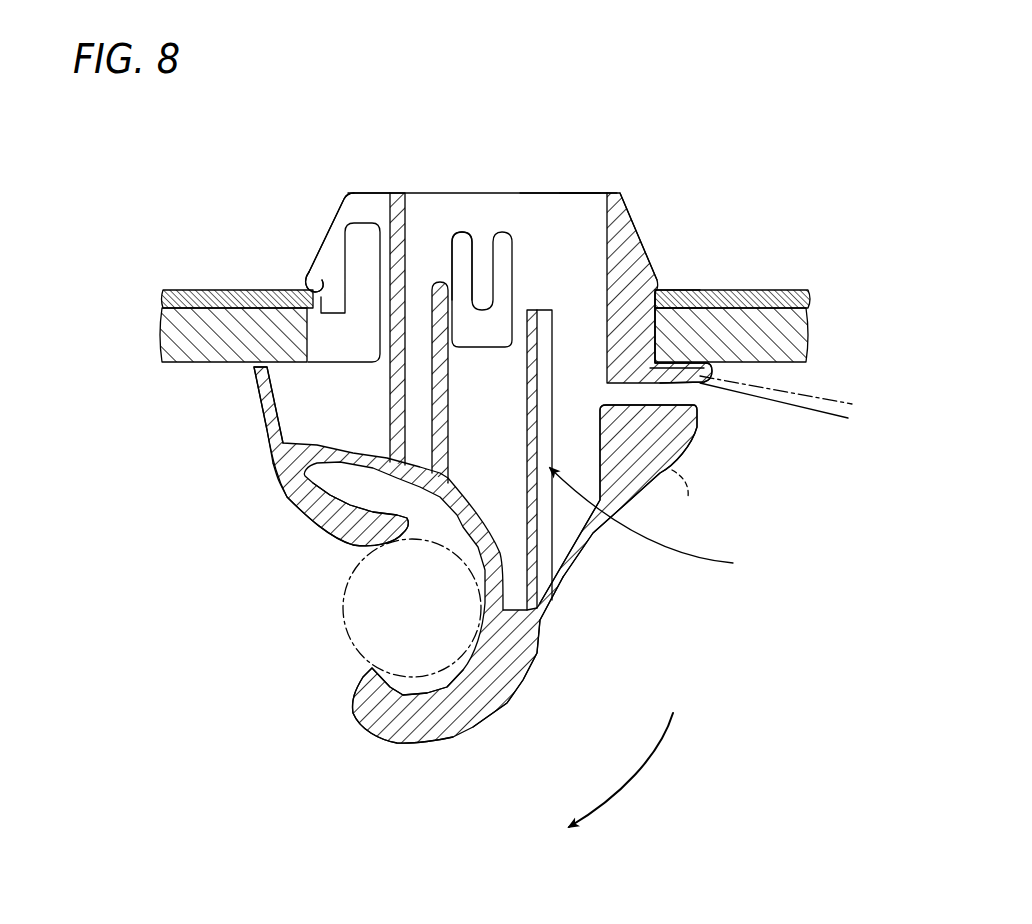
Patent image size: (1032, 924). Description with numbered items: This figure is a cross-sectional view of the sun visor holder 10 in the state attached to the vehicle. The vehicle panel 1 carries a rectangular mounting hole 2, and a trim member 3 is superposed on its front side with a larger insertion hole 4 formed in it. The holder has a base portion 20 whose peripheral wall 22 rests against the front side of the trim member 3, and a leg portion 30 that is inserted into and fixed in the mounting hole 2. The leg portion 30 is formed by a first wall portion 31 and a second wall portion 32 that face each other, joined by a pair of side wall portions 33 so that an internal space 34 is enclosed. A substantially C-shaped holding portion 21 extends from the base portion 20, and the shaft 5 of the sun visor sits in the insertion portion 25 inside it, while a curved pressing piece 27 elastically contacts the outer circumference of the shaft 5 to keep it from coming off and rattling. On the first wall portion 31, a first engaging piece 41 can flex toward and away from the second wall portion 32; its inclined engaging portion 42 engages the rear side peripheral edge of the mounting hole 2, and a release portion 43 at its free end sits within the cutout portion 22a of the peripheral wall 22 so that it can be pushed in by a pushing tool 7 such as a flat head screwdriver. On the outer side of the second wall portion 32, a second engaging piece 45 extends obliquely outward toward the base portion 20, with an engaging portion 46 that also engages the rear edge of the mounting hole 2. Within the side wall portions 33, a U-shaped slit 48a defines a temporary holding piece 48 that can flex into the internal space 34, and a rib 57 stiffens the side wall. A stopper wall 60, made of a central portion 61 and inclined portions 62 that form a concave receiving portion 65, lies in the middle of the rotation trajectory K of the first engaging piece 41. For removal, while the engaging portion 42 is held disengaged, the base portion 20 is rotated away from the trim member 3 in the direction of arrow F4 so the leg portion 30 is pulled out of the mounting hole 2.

The sun visor holder 10 is at (343, 166).
The leg portion 30 is at (595, 182).
The first wall portion 31 is at (617, 205).
The second wall portion 32 is at (398, 212).
The side wall portion 33 is at (553, 195).
The internal space 34 is at (546, 237).
The first engaging piece 41 is at (650, 243).
The engaging portion 42 is at (658, 295).
The release portion 43 is at (665, 383).
The second engaging piece 45 is at (335, 236).
The engaging portion 46 is at (318, 290).
The temporary holding piece 48 is at (485, 250).
The slit 48a is at (460, 238).
The rib 57 is at (440, 280).
The stopper wall 60 is at (540, 300).
The central portion 61 is at (533, 540).
The inclined portion 62 is at (545, 503).
The concave receiving portion 65 is at (655, 523).
The rotation trajectory K is at (680, 499).
The base portion 20 is at (193, 394).
The holding portion 21 is at (465, 740).
The peripheral wall 22 is at (262, 405).
The cutout portion 22a is at (683, 393).
The insertion portion 25 is at (477, 655).
The pressing piece 27 is at (315, 516).
The shaft 5 is at (343, 620).
The vehicle panel 1 is at (785, 295).
The mounting hole 2 is at (656, 306).
The trim member 3 is at (800, 335).
The insertion hole 4 is at (660, 336).
The pushing tool 7 is at (820, 418).
The arrow F4 is at (648, 764).